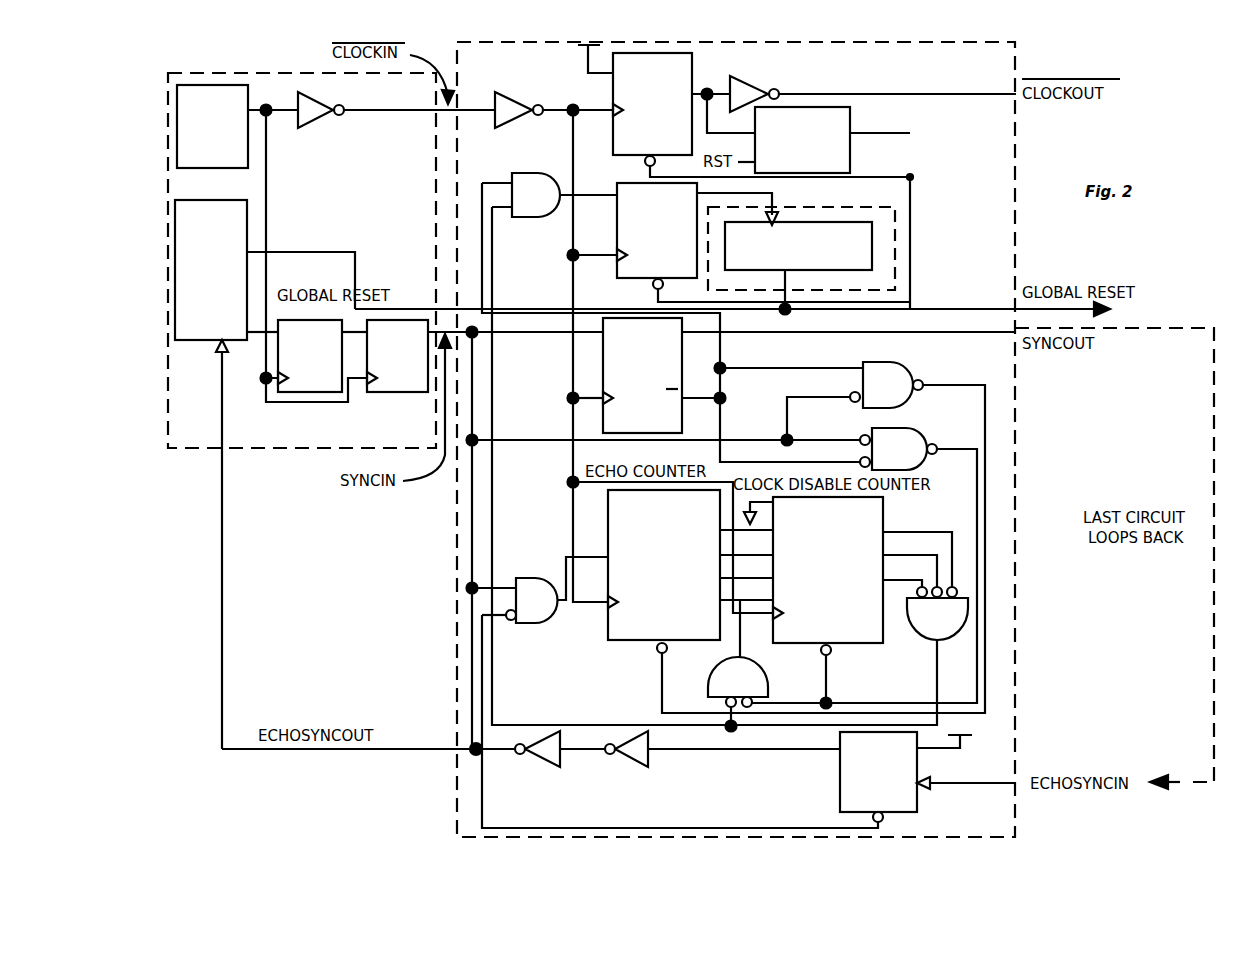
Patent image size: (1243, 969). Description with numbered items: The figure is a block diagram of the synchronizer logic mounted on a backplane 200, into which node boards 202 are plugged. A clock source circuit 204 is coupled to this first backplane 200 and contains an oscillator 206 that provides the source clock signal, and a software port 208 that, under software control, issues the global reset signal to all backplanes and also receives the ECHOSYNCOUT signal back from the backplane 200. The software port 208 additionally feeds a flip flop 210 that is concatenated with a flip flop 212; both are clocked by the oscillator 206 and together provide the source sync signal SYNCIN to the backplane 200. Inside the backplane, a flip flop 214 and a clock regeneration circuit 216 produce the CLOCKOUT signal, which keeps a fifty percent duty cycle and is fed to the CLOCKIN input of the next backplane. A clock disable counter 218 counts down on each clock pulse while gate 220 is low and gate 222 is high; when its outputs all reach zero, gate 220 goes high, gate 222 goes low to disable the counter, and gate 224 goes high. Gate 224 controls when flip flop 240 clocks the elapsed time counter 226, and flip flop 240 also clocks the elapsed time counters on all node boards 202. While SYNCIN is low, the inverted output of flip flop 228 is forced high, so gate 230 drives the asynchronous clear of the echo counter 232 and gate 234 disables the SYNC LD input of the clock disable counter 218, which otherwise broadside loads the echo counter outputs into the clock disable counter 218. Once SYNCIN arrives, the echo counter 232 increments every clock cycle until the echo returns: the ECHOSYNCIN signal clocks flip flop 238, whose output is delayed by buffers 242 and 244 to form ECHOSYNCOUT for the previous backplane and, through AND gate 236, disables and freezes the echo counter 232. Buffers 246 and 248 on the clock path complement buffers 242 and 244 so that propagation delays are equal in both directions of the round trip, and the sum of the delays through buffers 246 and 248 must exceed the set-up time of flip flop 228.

The backplane 200 is at (736, 440).
The node boards 202 is at (801, 250).
The clock source circuit 204 is at (302, 261).
The oscillator 206 is at (212, 126).
The software port 208 is at (211, 270).
The flip flop 210 is at (310, 356).
The flip flop 212 is at (397, 356).
The flip flop 214 is at (652, 109).
The clock regeneration circuit 216 is at (802, 140).
The clock disable counter 218 is at (828, 576).
The gate 220 is at (937, 613).
The gate 222 is at (738, 682).
The gate 224 is at (536, 195).
The elapsed time counter 226 is at (798, 246).
The flip flop 228 is at (642, 375).
The gate 230 is at (886, 385).
The echo counter 232 is at (664, 571).
The gate 234 is at (898, 449).
The AND gate 236 is at (532, 600).
The flip flop 238 is at (838, 770).
The flip flop 240 is at (657, 236).
The buffer 242 is at (632, 760).
The buffer 244 is at (542, 760).
The buffer 246 is at (520, 124).
The buffer 248 is at (755, 88).